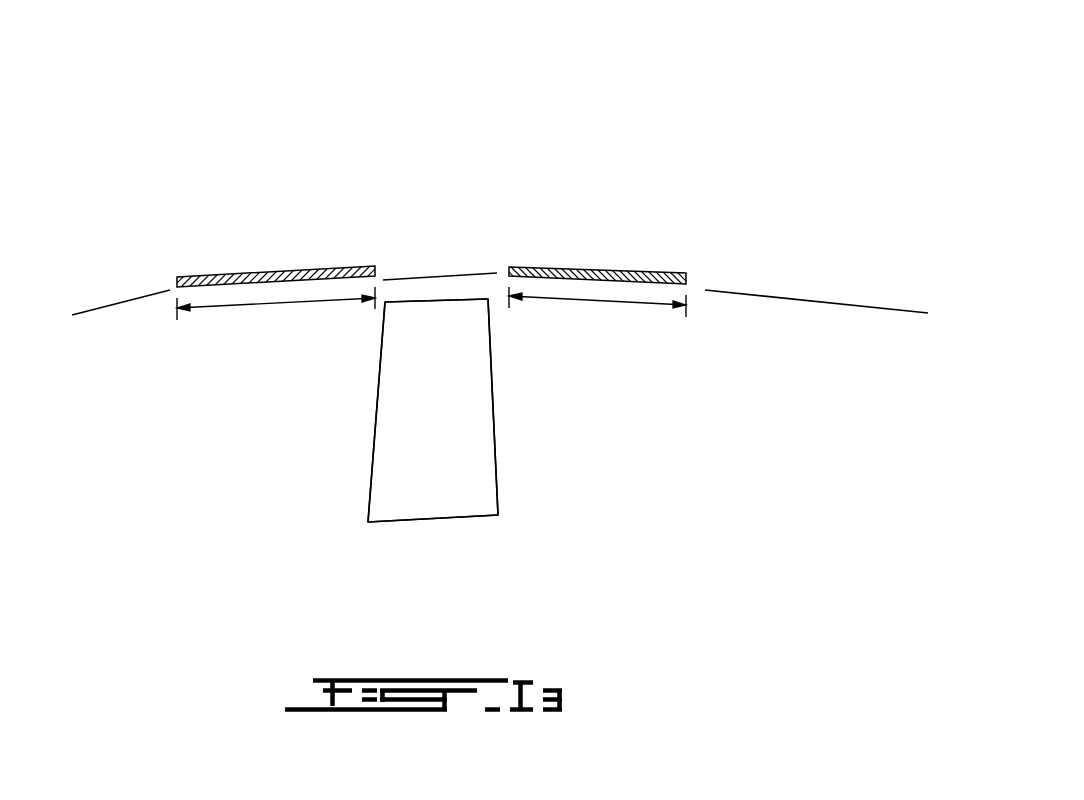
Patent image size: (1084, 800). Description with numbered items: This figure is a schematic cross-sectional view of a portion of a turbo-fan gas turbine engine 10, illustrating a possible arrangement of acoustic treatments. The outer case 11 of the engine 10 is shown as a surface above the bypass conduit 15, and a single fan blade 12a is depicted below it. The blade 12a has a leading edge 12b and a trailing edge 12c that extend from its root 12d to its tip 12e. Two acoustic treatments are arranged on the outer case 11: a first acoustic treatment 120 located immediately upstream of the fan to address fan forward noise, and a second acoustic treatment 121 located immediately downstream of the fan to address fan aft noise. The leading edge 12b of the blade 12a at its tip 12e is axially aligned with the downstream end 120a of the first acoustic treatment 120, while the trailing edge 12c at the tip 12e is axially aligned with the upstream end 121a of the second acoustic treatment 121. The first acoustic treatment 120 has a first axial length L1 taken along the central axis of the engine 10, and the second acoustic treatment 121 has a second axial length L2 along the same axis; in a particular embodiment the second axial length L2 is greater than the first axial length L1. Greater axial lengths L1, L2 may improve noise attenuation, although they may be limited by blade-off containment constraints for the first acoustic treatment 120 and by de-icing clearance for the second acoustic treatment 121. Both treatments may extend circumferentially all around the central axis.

The engine 10 is at (798, 131).
The outer case 11 is at (120, 302).
The first acoustic treatment 120 is at (258, 272).
The second acoustic treatment 121 is at (600, 267).
The downstream end of first casing treatment 120a is at (382, 260).
The upstream end of second casing treatment 121a is at (506, 256).
The blade 12a is at (460, 423).
The leading edge 12b is at (378, 412).
The trailing edge 12c is at (498, 487).
The root 12d is at (442, 520).
The tip 12e is at (445, 302).
The first axial length L1 is at (275, 307).
The second axial length L2 is at (598, 302).
The bypass conduit 15 is at (747, 435).